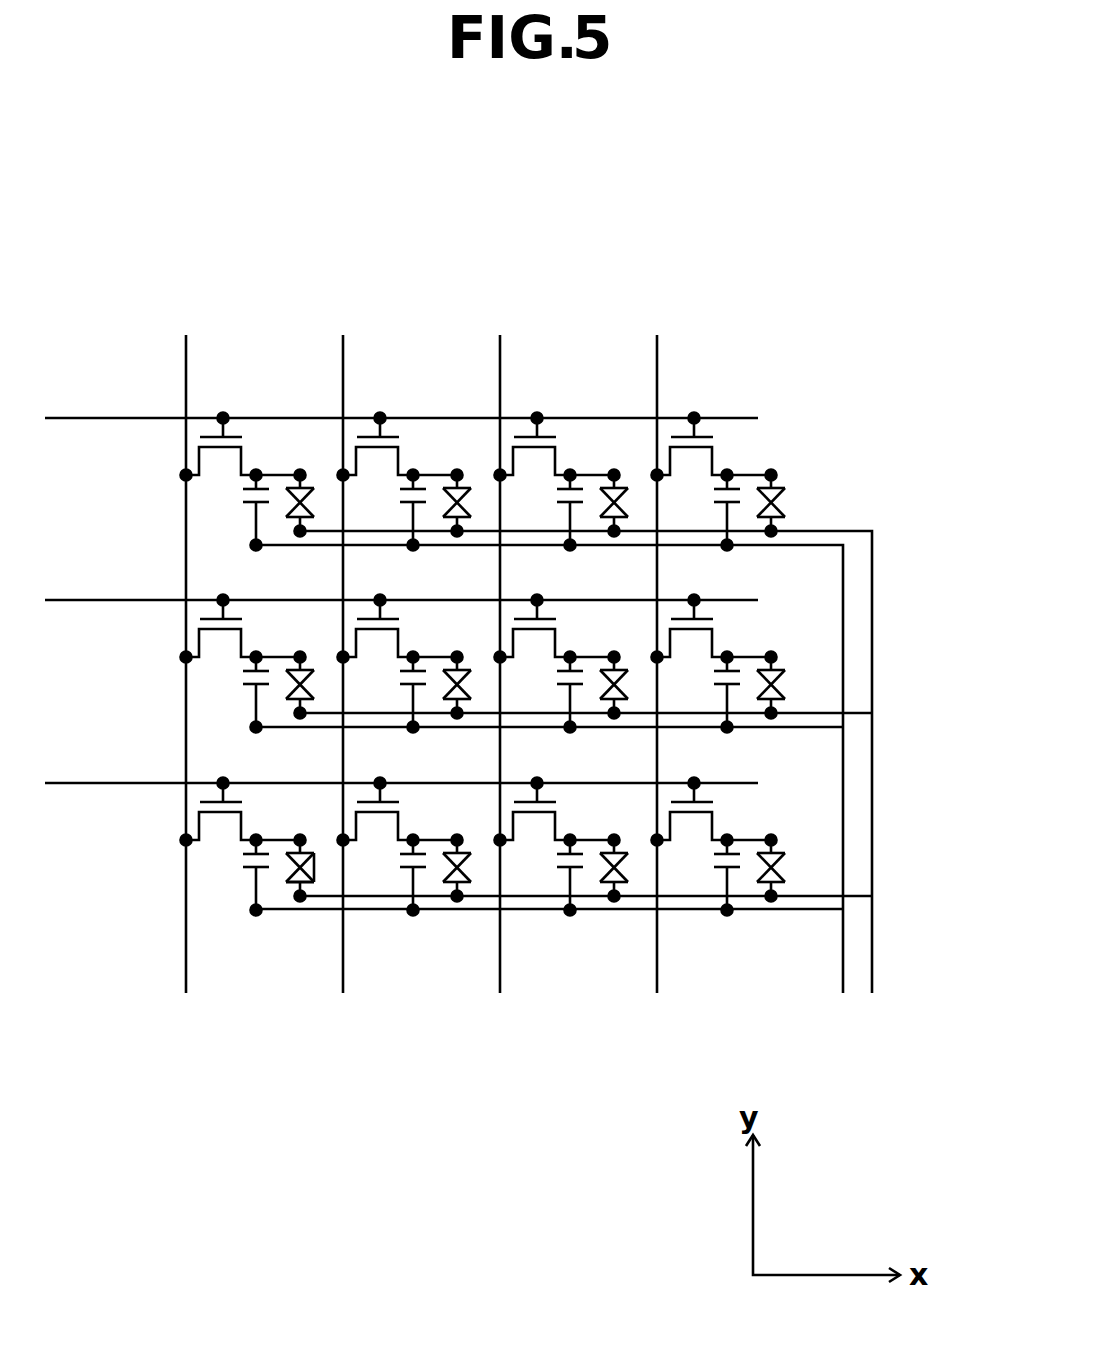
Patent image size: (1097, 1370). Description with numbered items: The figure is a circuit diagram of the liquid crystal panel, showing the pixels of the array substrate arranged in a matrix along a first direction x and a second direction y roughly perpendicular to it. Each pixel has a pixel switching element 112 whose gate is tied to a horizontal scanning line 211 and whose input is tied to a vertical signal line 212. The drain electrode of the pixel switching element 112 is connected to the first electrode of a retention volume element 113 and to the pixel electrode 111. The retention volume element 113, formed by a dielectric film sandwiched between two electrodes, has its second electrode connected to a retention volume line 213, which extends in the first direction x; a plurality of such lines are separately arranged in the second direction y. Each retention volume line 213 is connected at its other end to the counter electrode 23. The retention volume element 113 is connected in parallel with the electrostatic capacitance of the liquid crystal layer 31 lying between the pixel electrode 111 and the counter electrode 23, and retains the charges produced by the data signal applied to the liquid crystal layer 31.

The scanning line 211 is at (145, 782).
The signal line 212 is at (186, 978).
The retention volume line 213 is at (812, 907).
The pixel switching element 112 is at (197, 808).
The retention volume element 113 is at (238, 863).
The pixel electrode 111 is at (303, 857).
The counter electrode 23 is at (283, 880).
The liquid crystal layer 31 is at (320, 875).